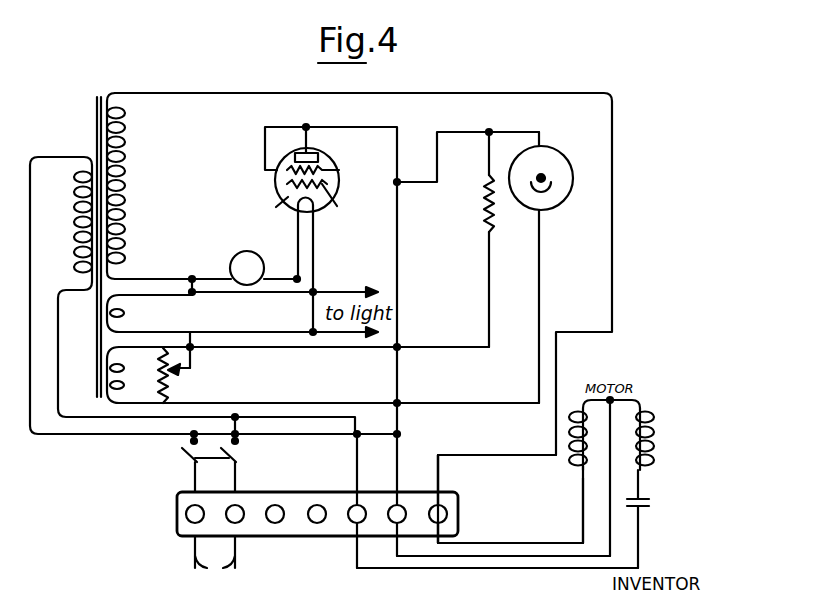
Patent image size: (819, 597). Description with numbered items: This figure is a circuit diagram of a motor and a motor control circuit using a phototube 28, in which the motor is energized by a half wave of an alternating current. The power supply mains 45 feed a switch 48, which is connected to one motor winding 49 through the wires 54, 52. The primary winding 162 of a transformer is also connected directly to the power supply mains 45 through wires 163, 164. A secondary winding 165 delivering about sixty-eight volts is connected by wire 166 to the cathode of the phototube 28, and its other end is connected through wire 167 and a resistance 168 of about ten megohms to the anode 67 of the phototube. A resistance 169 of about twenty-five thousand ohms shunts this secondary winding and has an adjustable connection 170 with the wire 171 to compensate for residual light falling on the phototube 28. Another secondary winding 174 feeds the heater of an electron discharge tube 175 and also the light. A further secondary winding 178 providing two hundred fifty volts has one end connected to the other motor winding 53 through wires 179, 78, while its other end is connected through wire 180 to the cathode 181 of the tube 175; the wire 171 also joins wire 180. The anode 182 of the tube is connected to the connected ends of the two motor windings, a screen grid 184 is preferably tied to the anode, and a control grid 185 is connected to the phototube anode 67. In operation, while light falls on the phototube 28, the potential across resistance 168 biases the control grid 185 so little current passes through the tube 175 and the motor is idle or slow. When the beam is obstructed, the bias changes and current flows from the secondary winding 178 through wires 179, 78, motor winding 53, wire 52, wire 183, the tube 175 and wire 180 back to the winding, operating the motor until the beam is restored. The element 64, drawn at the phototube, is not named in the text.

The phototube 28 is at (558, 204).
The power supply mains 45 is at (215, 565).
The switch 48 is at (182, 455).
The motor winding 49 is at (653, 441).
The wire 52 is at (477, 557).
The motor winding 53 is at (572, 462).
The wire 54 is at (402, 569).
The lamp electrode 64 is at (541, 178).
The anode 67 is at (541, 178).
The wire 78 is at (500, 526).
The primary winding 162 is at (74, 209).
The wire 163 is at (102, 436).
The wire 164 is at (46, 436).
The secondary winding 165 is at (122, 370).
The wire 166 is at (290, 390).
The wire 167 is at (443, 348).
The resistance 168 is at (483, 208).
The resistance 169 is at (133, 376).
The adjustable connection 170 is at (178, 373).
The wire 171 is at (192, 362).
The secondary winding 174 is at (123, 313).
The electron discharge tube 175 is at (275, 188).
The secondary winding 178 is at (125, 163).
The wire 179 is at (199, 93).
The wire 180 is at (190, 278).
The cathode 181 is at (279, 264).
The anode 182 is at (316, 156).
The wire 183 is at (363, 127).
The screen grid 184 is at (339, 170).
The control grid 185 is at (337, 206).